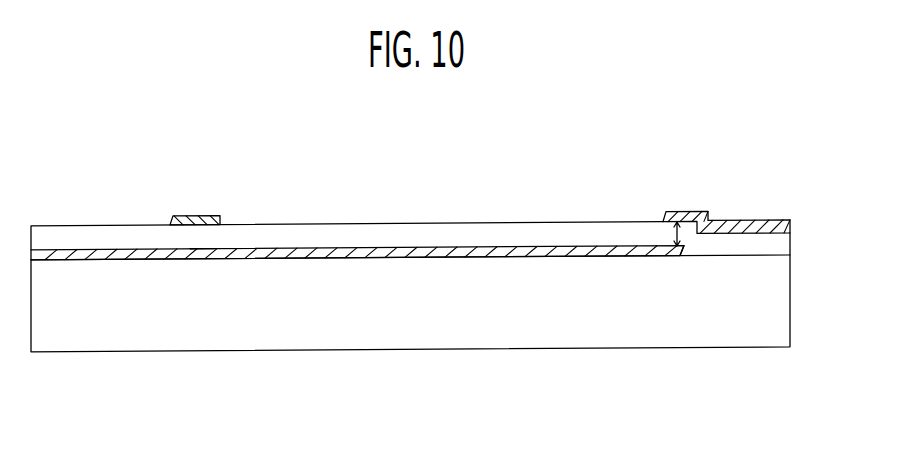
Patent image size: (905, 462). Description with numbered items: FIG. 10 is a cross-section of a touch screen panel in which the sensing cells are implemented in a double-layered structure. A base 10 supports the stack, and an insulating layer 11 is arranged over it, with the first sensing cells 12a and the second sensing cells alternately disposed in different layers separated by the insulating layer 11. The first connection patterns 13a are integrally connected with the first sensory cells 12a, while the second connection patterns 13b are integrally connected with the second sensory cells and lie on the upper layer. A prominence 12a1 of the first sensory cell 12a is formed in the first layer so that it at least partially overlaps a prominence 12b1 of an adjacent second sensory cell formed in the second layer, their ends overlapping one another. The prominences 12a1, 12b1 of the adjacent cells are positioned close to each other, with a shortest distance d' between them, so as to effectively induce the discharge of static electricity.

The substrate 10 is at (790, 299).
The insulating layer 11 is at (790, 242).
The first sensing cell 12a is at (100, 261).
The prominence of the first sensory cell 12a1 is at (675, 257).
The prominence of the second sensory cell 12b1 is at (683, 211).
The first connection pattern 13a is at (202, 260).
The second connection pattern 13b is at (193, 216).
The distance between electrode layers d' is at (665, 198).